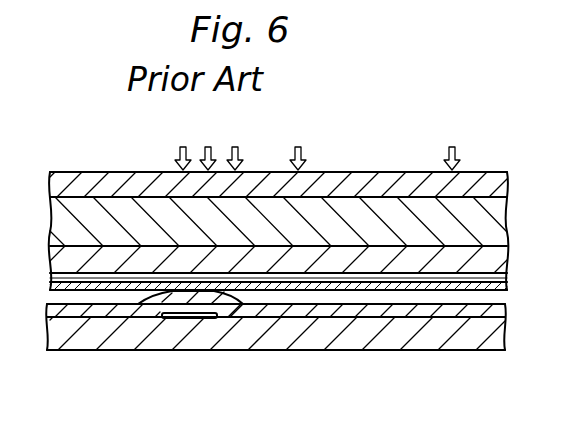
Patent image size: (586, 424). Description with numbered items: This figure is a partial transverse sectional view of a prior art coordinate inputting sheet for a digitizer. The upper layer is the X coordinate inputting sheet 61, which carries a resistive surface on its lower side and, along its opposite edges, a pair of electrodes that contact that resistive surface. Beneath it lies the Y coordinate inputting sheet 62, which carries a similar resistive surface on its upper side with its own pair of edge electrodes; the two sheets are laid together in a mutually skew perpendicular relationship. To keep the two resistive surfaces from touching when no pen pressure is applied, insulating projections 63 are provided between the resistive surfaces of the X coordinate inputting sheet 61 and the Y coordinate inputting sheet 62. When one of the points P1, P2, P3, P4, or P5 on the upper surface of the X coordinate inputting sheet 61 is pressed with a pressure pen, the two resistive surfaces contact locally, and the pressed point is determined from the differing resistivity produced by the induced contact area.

The X coordinate inputting sheet 61 is at (497, 173).
The Y coordinate inputting sheet 62 is at (502, 303).
The insulating projections 63 is at (150, 325).
The point on upper surface of X coordinate inputting sheet P1 is at (179, 148).
The point on upper surface of X coordinate inputting sheet P2 is at (204, 148).
The point on upper surface of X coordinate inputting sheet P3 is at (238, 148).
The point on upper surface of X coordinate inputting sheet P4 is at (294, 148).
The point on upper surface of X coordinate inputting sheet P5 is at (448, 148).